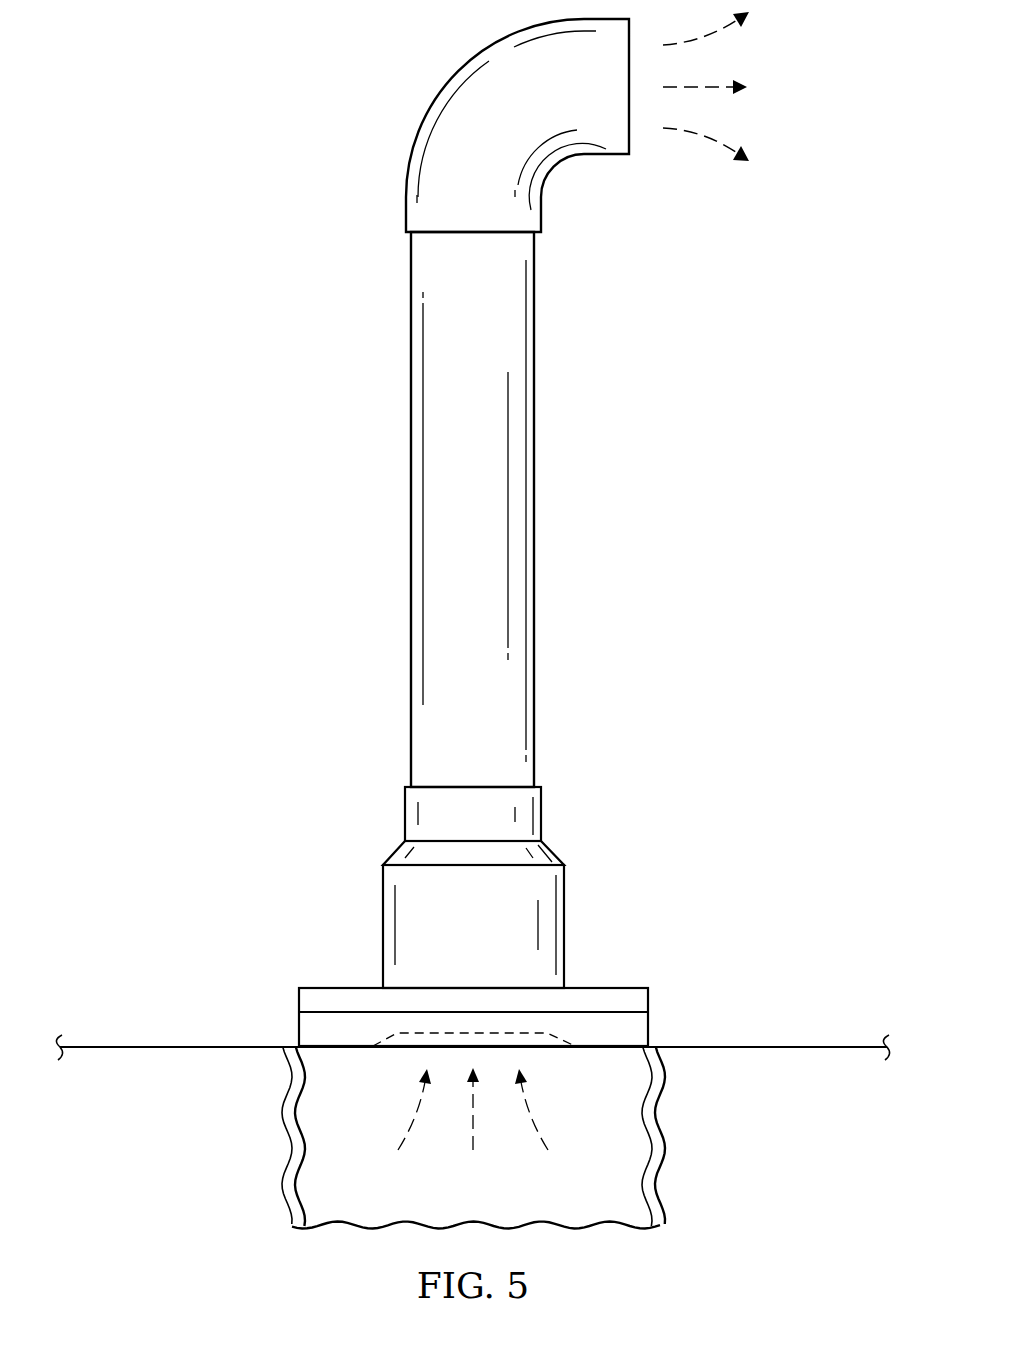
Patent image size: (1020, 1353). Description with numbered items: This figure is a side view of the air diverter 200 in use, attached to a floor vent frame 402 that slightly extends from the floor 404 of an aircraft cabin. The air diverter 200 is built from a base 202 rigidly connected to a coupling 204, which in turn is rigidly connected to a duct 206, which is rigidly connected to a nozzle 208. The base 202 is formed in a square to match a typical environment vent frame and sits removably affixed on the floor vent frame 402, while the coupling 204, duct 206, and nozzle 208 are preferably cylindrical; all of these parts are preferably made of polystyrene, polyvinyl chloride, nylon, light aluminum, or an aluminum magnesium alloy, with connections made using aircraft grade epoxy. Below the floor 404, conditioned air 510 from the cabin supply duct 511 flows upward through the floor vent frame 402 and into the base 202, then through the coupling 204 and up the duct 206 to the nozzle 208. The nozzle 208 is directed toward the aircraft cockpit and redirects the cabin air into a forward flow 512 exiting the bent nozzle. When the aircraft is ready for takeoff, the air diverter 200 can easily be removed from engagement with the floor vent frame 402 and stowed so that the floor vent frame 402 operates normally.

The air diverter 200 is at (303, 70).
The base 202 is at (338, 987).
The coupling 204 is at (565, 928).
The duct 206 is at (534, 520).
The nozzle 208 is at (468, 68).
The floor vent frame 402 is at (468, 1033).
The floor 404 is at (780, 1046).
The conditioned air 510 is at (555, 1163).
The cabin supply duct 511 is at (666, 1117).
The forward flow 512 is at (775, 4).